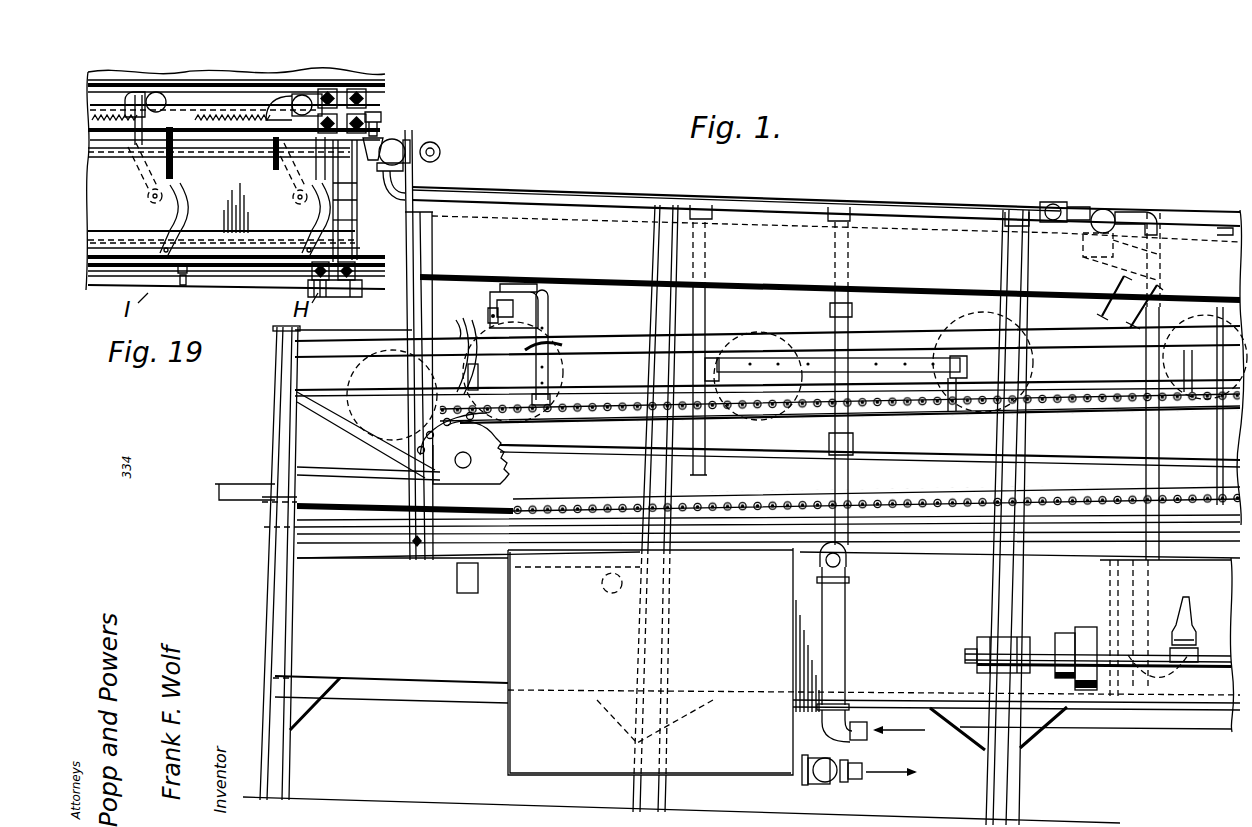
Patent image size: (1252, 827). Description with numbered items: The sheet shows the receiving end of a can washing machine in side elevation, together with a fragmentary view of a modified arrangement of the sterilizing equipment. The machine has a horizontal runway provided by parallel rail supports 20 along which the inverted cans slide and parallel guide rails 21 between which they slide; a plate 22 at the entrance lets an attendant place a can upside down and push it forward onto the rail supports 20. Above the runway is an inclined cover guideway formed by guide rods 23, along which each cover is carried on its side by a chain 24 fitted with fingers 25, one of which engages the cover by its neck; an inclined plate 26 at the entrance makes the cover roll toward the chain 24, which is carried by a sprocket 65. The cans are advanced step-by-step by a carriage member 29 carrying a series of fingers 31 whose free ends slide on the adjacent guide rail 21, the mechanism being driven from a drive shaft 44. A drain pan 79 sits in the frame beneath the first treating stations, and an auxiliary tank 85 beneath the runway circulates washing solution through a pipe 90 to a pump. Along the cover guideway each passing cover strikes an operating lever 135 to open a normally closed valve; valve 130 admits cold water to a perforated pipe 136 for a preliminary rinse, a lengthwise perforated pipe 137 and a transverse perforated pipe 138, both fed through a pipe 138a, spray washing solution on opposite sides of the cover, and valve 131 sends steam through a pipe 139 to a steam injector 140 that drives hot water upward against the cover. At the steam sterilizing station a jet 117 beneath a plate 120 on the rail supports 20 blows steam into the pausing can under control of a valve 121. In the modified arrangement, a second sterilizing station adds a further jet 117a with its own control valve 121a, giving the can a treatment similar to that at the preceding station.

In FIG. 19, the control valve 121a is at (183, 63).
In FIG. 19, the valve 121 is at (302, 97).
In FIG. 19, the jet 117a is at (150, 196).
In FIG. 19, the steam jet 117 is at (294, 196).
In FIG. 19, the fingers 31 is at (183, 203).
In FIG. 19, the carriage member 29 is at (272, 250).
In FIG. 19, the plate 120 is at (345, 197).
In FIG. 19, the rail supports 20 is at (357, 221).
In FIG. 1, the rail supports 20 is at (243, 498).
In FIG. 19, the guide rails 21 is at (352, 243).
In FIG. 1, the valve 131 is at (1138, 196).
In FIG. 1, the pipe 136 is at (552, 310).
In FIG. 1, the operating lever 135 is at (550, 330).
In FIG. 1, the valve 130 is at (515, 292).
In FIG. 1, the guide rods 23 is at (457, 352).
In FIG. 1, the fingers 25 is at (479, 377).
In FIG. 1, the plate 26 is at (327, 427).
In FIG. 1, the sprocket 65 is at (505, 462).
In FIG. 1, the plate 22 is at (257, 480).
In FIG. 1, the drain pan 79 is at (375, 552).
In FIG. 1, the auxiliary tank 85 is at (523, 620).
In FIG. 1, the perforated pipe 137 is at (890, 357).
In FIG. 1, the perforated pipe 138 is at (832, 425).
In FIG. 1, the chain 24 is at (908, 413).
In FIG. 1, the pipe 138a is at (850, 478).
In FIG. 1, the pipe 90 is at (797, 772).
In FIG. 1, the pipe 139 is at (1146, 442).
In FIG. 1, the drive shaft 44 is at (1200, 670).
In FIG. 1, the steam injector 140 is at (1192, 586).